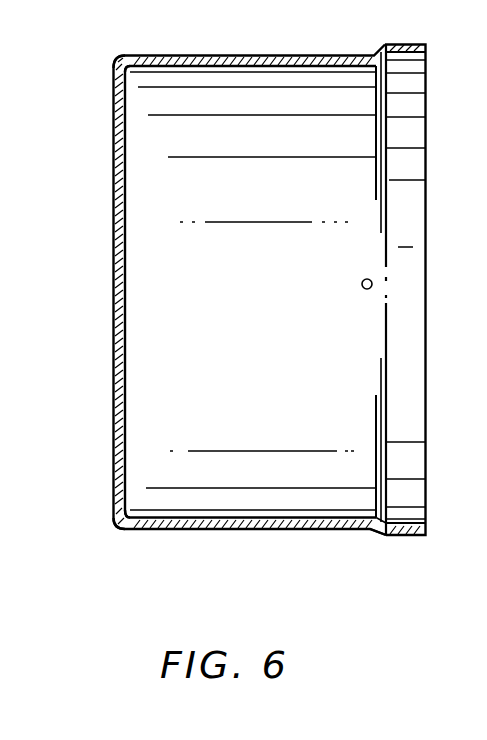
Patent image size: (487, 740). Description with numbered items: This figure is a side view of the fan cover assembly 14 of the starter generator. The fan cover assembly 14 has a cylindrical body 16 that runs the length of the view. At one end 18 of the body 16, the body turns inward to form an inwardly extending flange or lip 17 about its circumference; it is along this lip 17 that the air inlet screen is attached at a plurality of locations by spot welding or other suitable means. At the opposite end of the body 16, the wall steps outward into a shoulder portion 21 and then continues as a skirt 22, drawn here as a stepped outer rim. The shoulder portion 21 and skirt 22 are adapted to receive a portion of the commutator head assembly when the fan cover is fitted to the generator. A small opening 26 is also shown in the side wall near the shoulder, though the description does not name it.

The fan cover assembly 14 is at (262, 56).
The cylindrical body 16 is at (255, 531).
The inwardly extending flange or lip 17 is at (114, 509).
The one end of the body 18 is at (118, 62).
The shoulder portion 21 is at (371, 531).
The skirt 22 is at (424, 537).
The aperture 26 is at (364, 279).